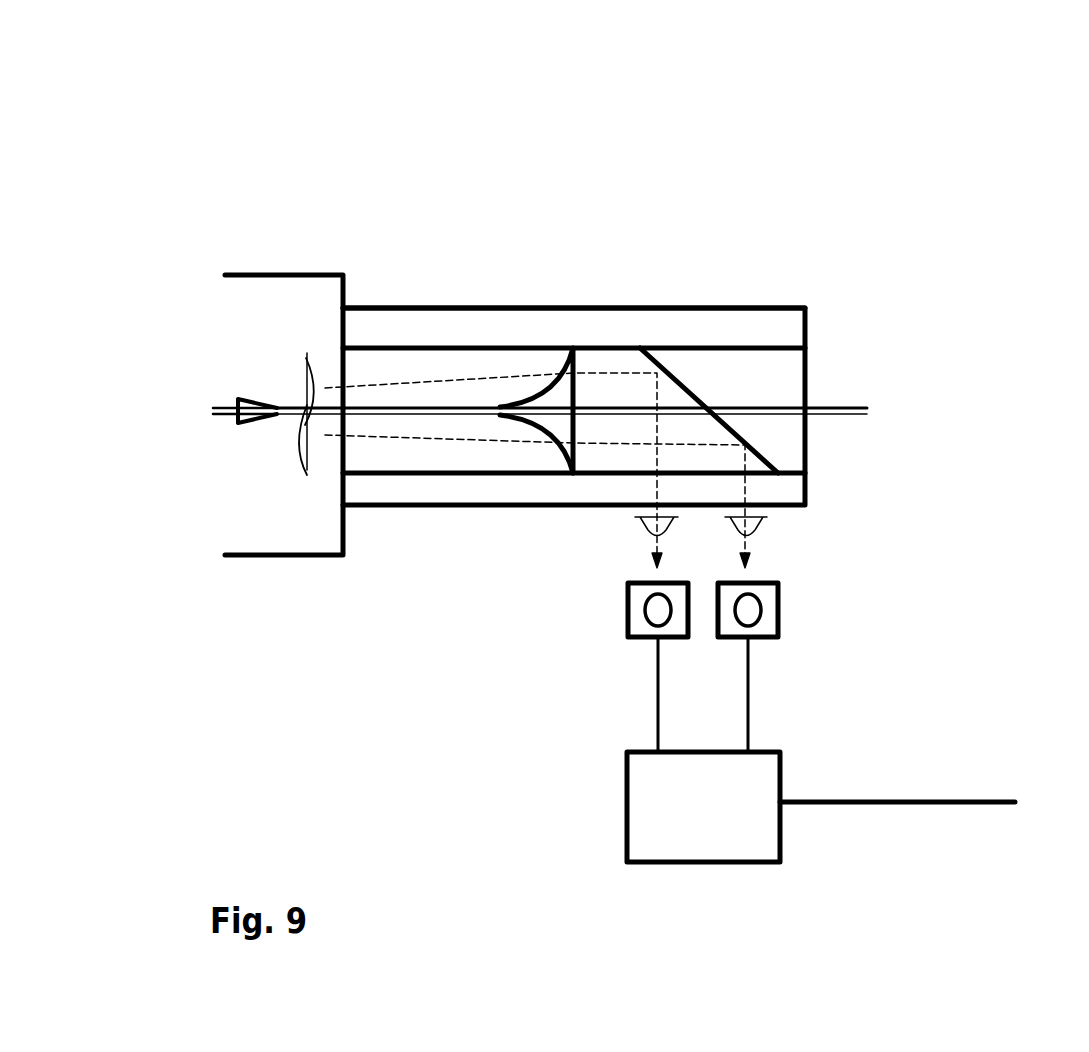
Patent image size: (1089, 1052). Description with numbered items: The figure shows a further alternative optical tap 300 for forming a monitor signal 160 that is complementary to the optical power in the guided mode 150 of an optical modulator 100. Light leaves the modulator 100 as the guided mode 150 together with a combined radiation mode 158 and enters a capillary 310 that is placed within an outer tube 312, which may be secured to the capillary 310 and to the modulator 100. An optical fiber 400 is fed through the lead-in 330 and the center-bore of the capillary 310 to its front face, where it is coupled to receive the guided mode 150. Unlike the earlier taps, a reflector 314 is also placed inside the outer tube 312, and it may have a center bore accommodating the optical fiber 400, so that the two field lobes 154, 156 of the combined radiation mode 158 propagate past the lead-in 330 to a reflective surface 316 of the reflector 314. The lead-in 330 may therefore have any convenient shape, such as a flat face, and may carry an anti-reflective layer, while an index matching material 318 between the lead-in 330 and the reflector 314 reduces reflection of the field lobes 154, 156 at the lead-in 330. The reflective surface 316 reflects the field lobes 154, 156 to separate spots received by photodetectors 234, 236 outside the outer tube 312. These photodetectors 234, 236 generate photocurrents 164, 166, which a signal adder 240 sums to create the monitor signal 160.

The optical modulator 100 is at (277, 232).
The guided mode 150 is at (245, 423).
The combined radiation mode 158 is at (308, 480).
The optical tap 300 is at (808, 137).
The capillary 310 is at (405, 347).
The outer tube 312 is at (465, 308).
The reflector 314 is at (762, 385).
The reflective surface 316 is at (673, 377).
The index matching material 318 is at (612, 392).
The lead-in 330 is at (533, 428).
The optical fiber 400 is at (849, 415).
The field lobe 154 is at (650, 532).
The field lobe 156 is at (756, 530).
The photodetector 234 is at (627, 627).
The photodetector 236 is at (778, 617).
The photocurrent 164 is at (652, 687).
The photocurrent 166 is at (750, 716).
The signal adder 240 is at (780, 847).
The monitor signal 160 is at (951, 800).